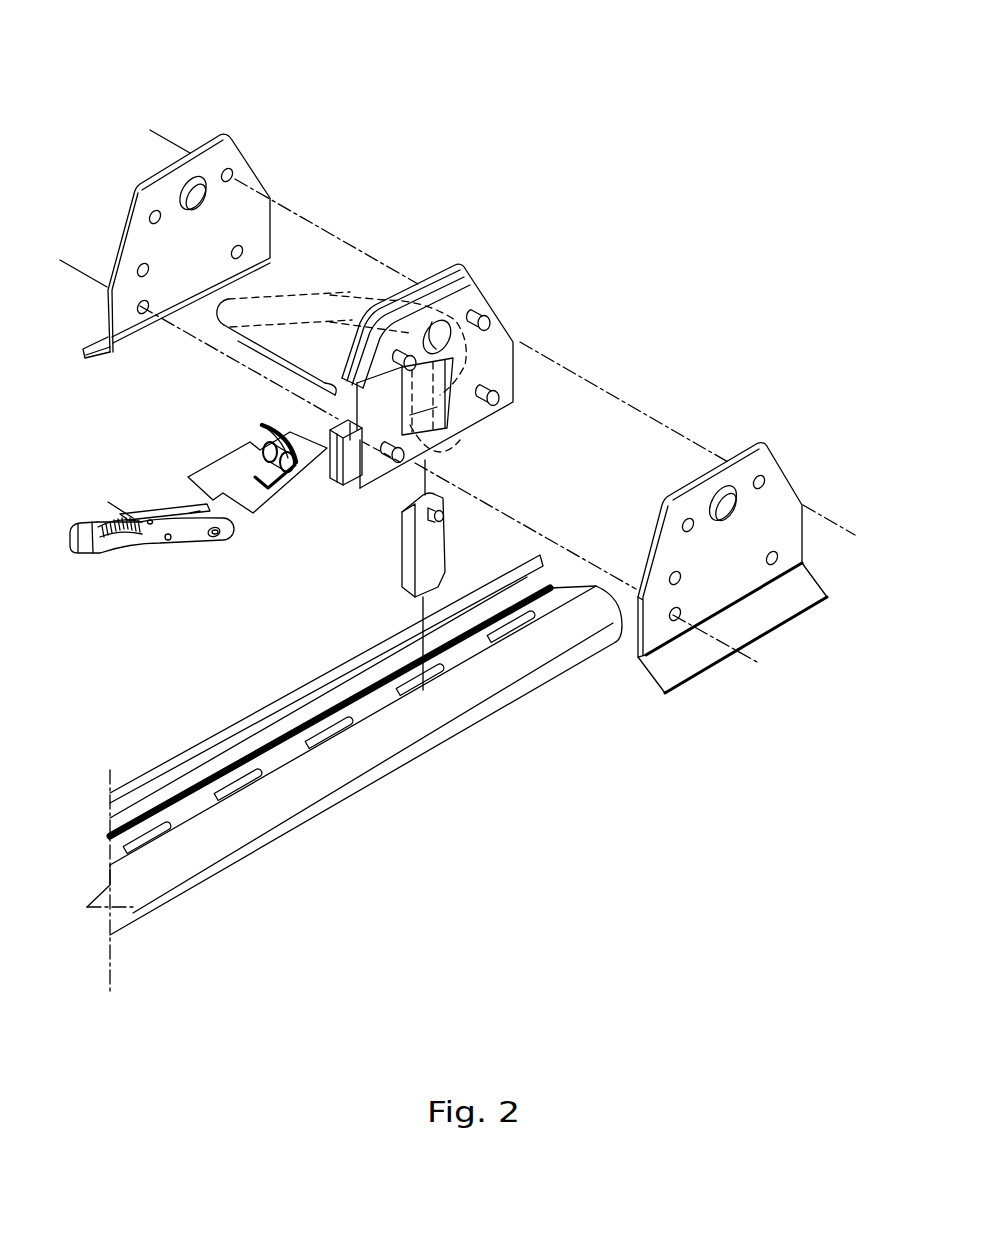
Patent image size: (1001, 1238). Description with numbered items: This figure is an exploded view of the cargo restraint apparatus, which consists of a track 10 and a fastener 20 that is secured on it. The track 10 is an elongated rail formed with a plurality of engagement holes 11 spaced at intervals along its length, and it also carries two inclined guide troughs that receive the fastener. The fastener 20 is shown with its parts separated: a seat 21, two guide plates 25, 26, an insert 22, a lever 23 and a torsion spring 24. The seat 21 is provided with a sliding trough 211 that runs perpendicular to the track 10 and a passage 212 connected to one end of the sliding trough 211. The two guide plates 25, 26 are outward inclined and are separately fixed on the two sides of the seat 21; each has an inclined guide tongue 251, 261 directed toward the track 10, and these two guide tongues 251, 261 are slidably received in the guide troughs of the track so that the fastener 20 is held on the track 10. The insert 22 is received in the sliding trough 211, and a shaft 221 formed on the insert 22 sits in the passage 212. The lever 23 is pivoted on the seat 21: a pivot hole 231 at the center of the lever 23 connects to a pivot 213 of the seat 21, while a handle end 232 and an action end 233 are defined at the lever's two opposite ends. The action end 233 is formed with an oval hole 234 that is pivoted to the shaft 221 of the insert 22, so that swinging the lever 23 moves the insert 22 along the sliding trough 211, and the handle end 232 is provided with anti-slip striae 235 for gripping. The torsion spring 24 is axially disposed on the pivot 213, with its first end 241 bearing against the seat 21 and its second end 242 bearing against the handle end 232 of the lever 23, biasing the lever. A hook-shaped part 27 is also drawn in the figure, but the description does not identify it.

The track 10 is at (241, 812).
The engagement holes 11 is at (364, 737).
The fastener 20 is at (518, 231).
The seat 21 is at (497, 360).
The sliding trough 211 is at (430, 442).
The passage 212 is at (473, 410).
The pivot 213 is at (397, 462).
The insert 22 is at (417, 555).
The shaft 221 is at (438, 522).
The lever 23 is at (162, 578).
The pivot hole 231 is at (170, 540).
The handle end 232 is at (110, 557).
The action end 233 is at (200, 512).
The oval hole 234 is at (213, 537).
The anti-slip striae 235 is at (105, 527).
The torsion spring 24 is at (265, 450).
The first end 241 is at (257, 483).
The second end 242 is at (267, 428).
The guide plate 25 is at (220, 202).
The guide tongue 251 is at (88, 358).
The guide plate 26 is at (757, 518).
The guide tongue 261 is at (697, 663).
The hook 27 is at (313, 300).